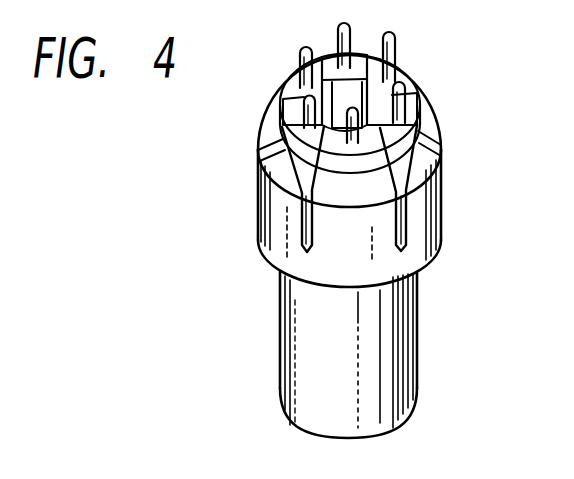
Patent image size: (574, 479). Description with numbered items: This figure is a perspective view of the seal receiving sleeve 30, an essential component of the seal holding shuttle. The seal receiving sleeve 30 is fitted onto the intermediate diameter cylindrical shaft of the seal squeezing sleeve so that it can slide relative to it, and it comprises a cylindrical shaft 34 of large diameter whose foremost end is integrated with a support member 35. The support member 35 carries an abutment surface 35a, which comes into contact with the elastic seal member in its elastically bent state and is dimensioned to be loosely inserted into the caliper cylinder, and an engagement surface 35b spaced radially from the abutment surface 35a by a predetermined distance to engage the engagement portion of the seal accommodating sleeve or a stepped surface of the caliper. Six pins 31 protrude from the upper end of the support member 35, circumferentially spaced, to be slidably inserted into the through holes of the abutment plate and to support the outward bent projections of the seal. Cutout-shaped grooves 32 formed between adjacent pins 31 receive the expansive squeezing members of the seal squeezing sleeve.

The seal receiving sleeve 30 is at (427, 280).
The pins 31 is at (352, 30).
The cutout-shaped grooves 32 is at (418, 210).
The cylindrical shaft 34 is at (292, 341).
The support member 35 is at (258, 215).
The abutment surface 35a is at (284, 84).
The engagement surface 35b is at (305, 150).